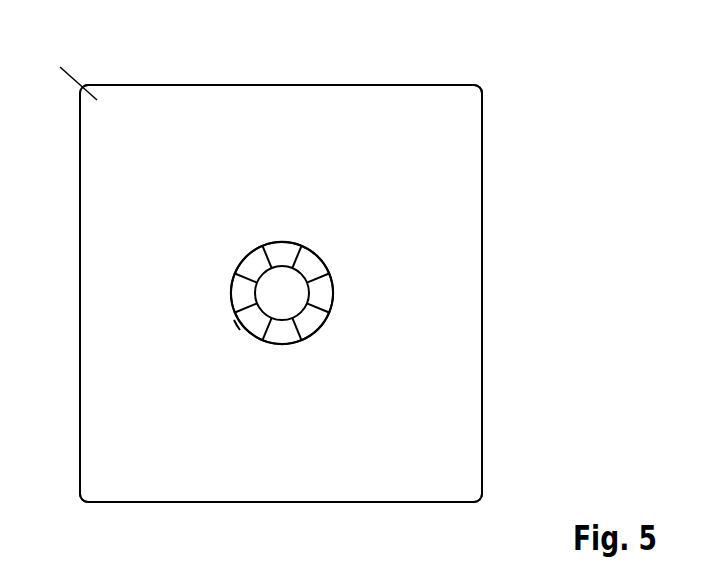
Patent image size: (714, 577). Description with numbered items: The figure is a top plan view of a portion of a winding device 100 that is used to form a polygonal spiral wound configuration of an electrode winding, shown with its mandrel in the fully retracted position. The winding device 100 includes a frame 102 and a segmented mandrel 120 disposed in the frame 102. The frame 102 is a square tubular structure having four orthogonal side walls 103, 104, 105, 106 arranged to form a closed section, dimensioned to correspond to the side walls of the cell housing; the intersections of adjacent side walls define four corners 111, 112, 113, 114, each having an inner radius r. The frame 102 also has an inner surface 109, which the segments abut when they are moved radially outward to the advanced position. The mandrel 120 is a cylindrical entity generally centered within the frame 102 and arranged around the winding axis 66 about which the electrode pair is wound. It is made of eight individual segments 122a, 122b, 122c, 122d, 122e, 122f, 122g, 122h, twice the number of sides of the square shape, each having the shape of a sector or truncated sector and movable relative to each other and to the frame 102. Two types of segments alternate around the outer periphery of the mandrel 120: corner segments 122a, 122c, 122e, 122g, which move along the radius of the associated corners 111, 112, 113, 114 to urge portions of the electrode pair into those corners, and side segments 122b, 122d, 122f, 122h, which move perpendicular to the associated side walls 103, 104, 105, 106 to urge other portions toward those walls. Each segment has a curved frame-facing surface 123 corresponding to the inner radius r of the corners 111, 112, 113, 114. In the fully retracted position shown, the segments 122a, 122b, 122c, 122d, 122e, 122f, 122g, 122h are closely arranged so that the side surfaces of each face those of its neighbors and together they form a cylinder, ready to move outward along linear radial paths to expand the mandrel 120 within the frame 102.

The winding device 100 is at (84, 58).
The inner radius r is at (74, 80).
The corner 113 is at (80, 88).
The corner 112 is at (482, 92).
The corner 111 is at (482, 493).
The corner 114 is at (80, 493).
The side wall 105 is at (283, 84).
The frame 102 is at (422, 84).
The side wall 103 is at (282, 502).
The side wall 104 is at (483, 295).
The side wall 106 is at (80, 293).
The inner surface 109 is at (483, 195).
The segmented mandrel 120 is at (249, 254).
The winding axis 66 is at (307, 287).
The frame-facing surface 123 is at (237, 320).
The corner segment 122a is at (317, 260).
The side segment 122b is at (333, 290).
The corner segment 122c is at (315, 323).
The side segment 122d is at (282, 330).
The corner segment 122e is at (250, 327).
The side segment 122f is at (238, 295).
The corner segment 122g is at (248, 262).
The side segment 122h is at (279, 248).